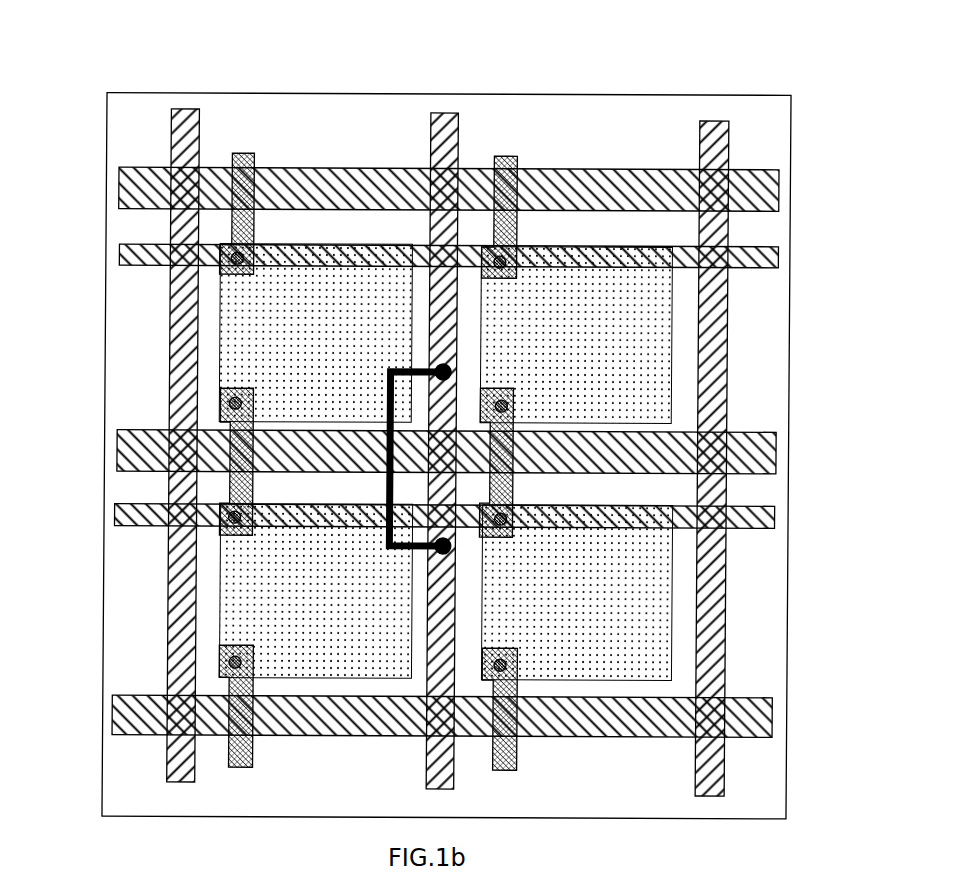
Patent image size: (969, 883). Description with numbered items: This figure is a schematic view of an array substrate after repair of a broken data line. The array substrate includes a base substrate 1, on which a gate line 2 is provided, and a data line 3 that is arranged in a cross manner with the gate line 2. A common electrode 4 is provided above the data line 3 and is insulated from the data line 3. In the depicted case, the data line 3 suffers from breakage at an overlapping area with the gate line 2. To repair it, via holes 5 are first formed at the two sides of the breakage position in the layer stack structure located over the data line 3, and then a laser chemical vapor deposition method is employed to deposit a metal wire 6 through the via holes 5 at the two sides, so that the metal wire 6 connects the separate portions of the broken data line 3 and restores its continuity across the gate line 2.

The base substrate 1 is at (446, 425).
The gate line 2 is at (777, 172).
The data line 3 is at (191, 141).
The common electrode 4 is at (172, 418).
The via holes 5 is at (396, 553).
The metal wire 6 is at (385, 473).